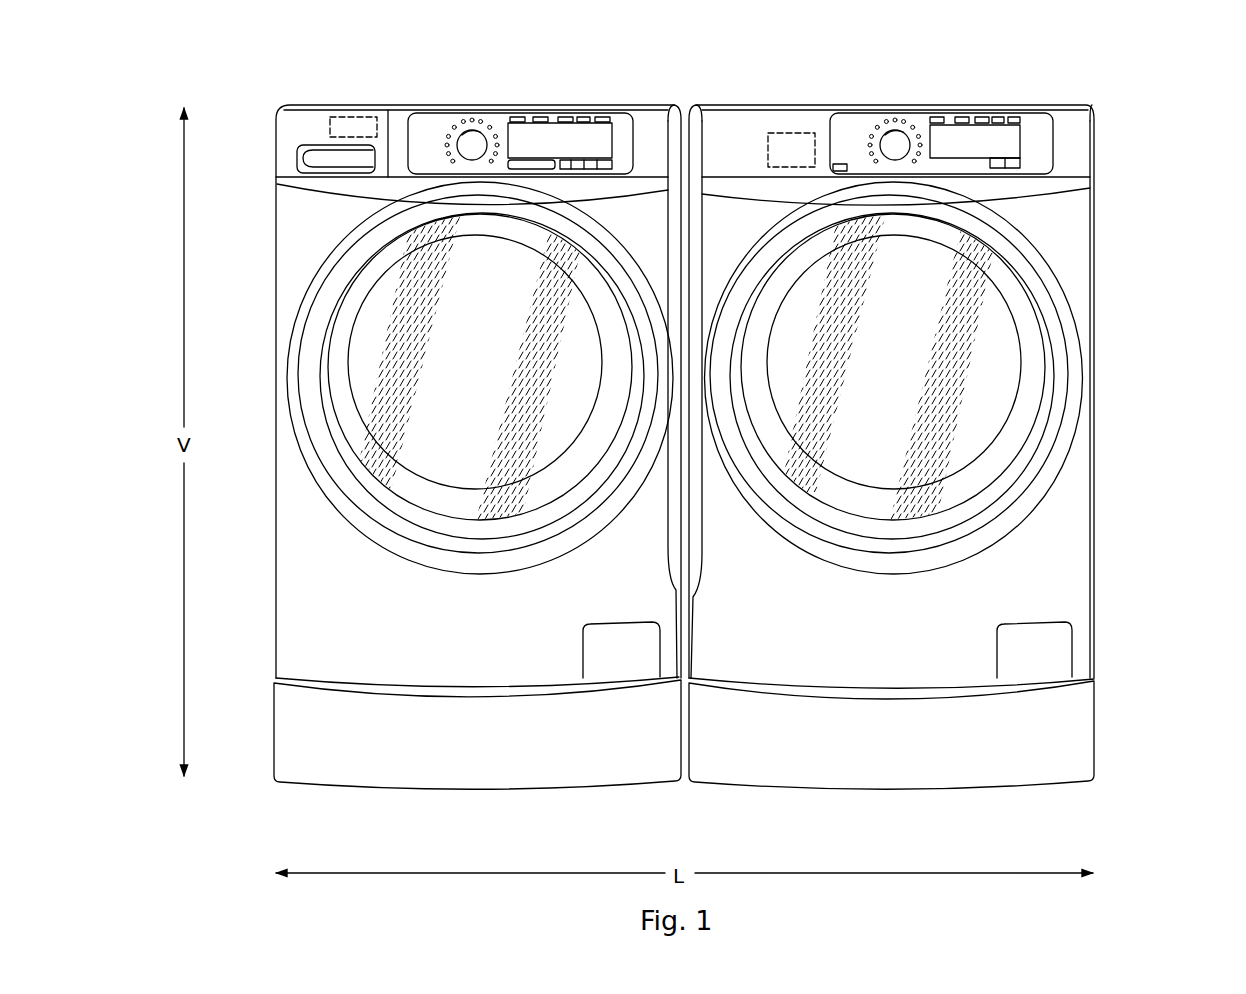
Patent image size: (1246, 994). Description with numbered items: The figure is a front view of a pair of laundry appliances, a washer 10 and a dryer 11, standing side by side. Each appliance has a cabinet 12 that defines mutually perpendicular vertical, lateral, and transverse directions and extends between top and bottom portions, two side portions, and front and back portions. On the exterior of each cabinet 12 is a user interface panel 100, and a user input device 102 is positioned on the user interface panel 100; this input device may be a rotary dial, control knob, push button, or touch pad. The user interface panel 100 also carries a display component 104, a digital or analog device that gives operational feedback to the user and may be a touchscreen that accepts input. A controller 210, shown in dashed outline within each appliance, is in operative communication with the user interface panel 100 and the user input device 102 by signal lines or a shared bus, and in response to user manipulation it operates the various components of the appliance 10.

The appliance 10 is at (250, 100).
The dryer 11 is at (1122, 130).
The cabinet 12 is at (303, 572).
The user interface panel 100 is at (498, 122).
The user input device 102 is at (470, 128).
The display component 104 is at (582, 138).
The controller 210 is at (357, 117).